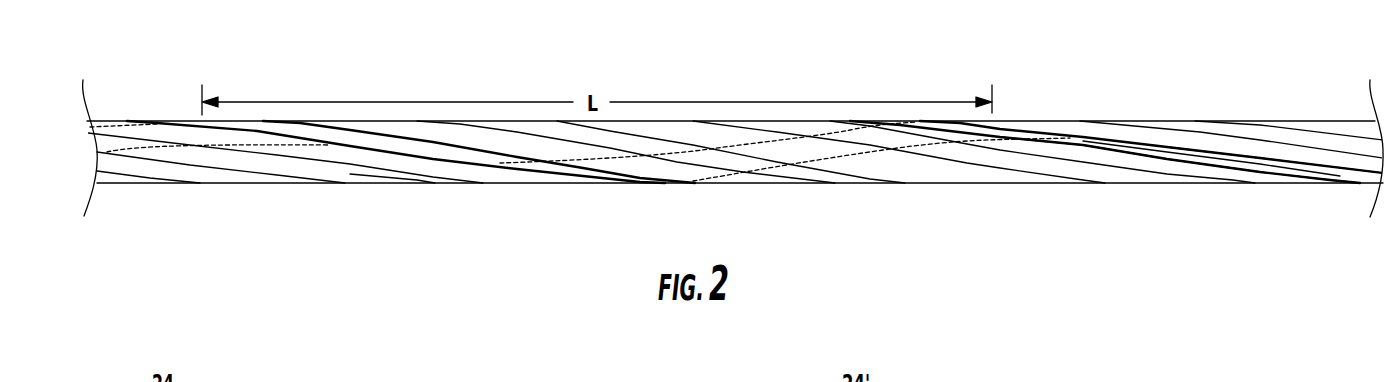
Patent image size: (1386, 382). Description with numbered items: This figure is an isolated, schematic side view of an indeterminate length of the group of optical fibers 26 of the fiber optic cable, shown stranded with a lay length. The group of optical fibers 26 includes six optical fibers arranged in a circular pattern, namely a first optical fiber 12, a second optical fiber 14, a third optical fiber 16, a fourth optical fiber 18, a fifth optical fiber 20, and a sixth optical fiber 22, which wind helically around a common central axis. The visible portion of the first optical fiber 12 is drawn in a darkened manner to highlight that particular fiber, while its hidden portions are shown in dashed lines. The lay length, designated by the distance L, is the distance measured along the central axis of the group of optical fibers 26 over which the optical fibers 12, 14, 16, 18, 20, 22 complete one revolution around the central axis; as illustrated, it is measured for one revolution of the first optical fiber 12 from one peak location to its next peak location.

The first optical fiber 12 is at (607, 184).
The second optical fiber 14 is at (743, 184).
The third optical fiber 16 is at (882, 184).
The fourth optical fiber 18 is at (1017, 184).
The fifth optical fiber 20 is at (1155, 184).
The sixth optical fiber 22 is at (1292, 184).
The group of optical fibers 26 is at (1120, 92).